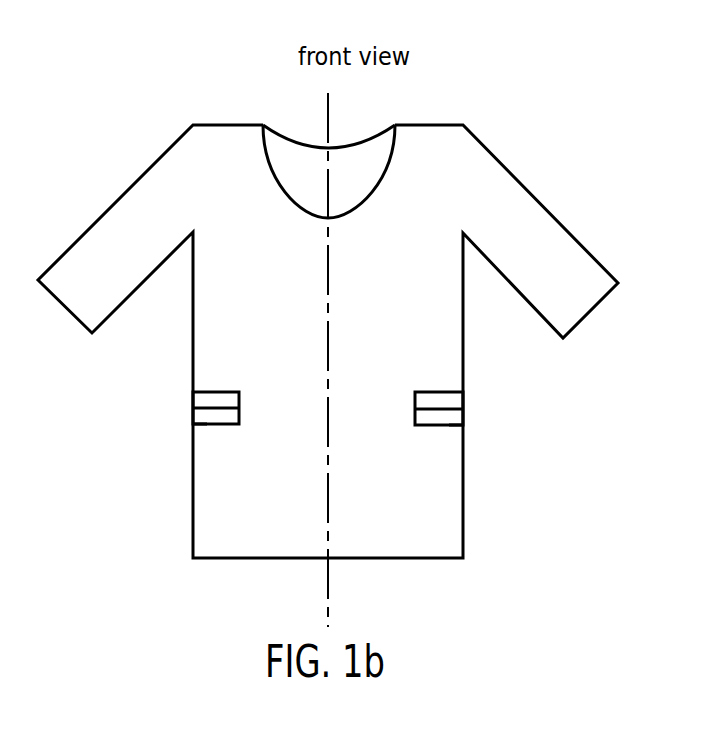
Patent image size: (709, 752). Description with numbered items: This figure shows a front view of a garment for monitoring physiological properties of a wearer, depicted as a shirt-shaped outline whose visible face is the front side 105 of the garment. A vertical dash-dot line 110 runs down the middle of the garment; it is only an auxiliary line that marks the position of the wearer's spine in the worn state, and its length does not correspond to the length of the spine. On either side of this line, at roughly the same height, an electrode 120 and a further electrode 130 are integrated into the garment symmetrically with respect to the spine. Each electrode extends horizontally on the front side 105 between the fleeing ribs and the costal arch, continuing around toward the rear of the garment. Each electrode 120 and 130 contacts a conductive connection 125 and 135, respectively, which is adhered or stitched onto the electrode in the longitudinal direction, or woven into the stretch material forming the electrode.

The front side 105 is at (202, 533).
The line 110 is at (328, 597).
The electrode 120 is at (450, 425).
The conductive connection 125 is at (463, 405).
The further electrode 130 is at (205, 425).
The conductive connection 135 is at (192, 405).